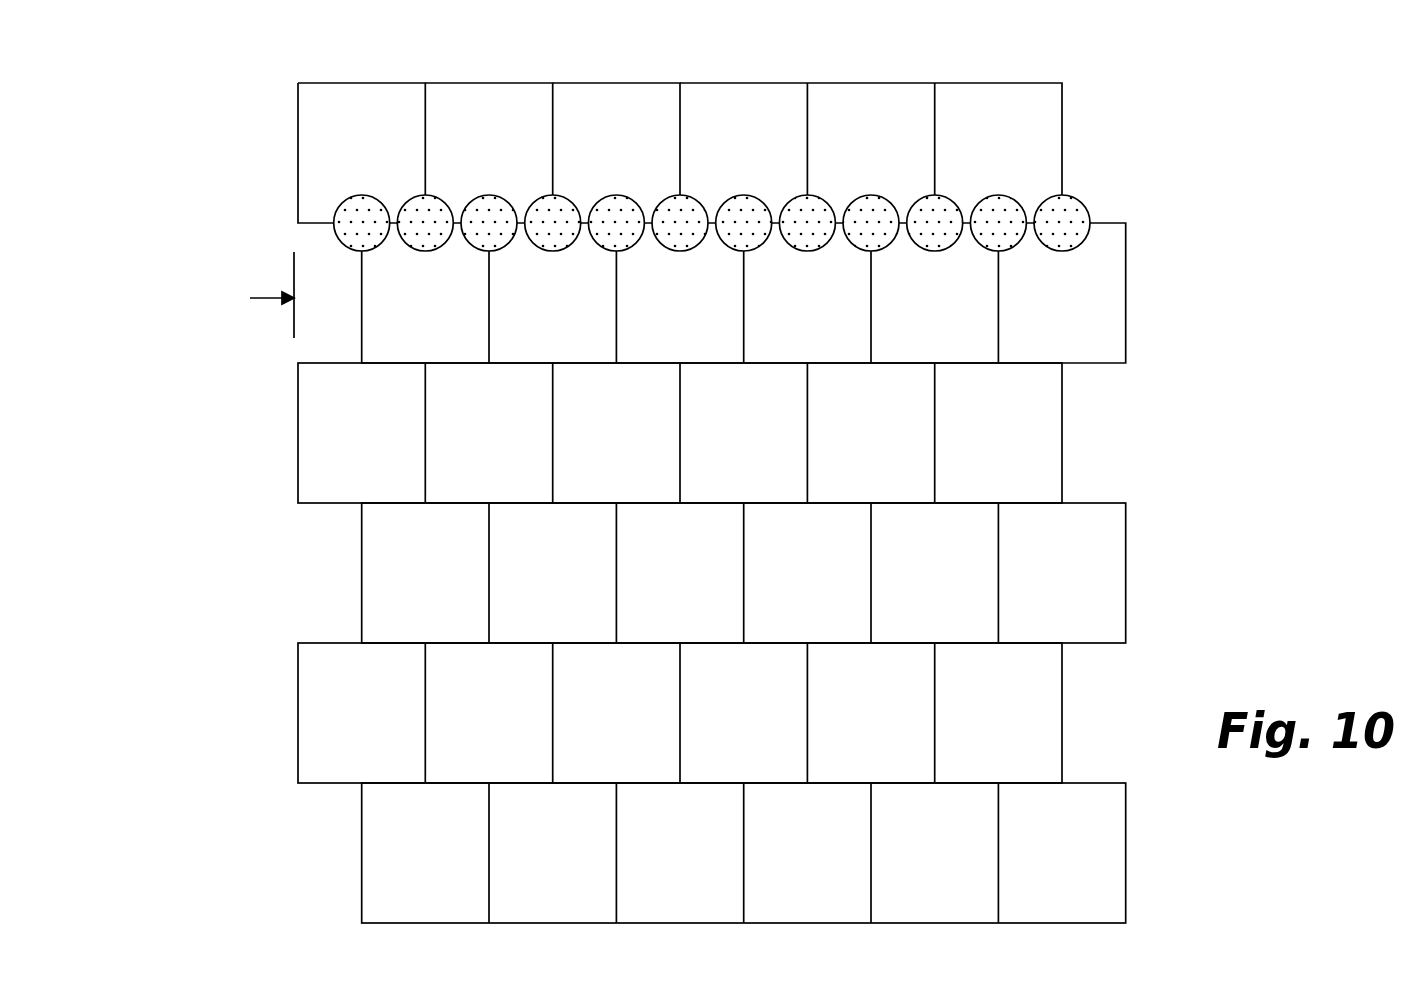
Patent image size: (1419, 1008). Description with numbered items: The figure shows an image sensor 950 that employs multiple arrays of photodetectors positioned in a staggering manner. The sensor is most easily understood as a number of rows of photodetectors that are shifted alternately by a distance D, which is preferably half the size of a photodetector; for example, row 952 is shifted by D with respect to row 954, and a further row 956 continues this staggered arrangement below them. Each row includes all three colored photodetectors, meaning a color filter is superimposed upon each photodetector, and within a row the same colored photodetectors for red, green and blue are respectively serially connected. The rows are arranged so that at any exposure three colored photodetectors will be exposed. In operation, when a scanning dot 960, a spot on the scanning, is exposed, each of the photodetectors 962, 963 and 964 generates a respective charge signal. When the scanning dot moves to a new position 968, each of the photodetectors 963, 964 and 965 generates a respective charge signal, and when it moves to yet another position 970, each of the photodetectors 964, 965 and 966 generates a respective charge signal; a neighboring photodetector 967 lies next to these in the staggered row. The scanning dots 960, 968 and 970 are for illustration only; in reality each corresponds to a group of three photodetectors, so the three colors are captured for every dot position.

The image sensor 950 is at (1156, 66).
The row 952 is at (243, 92).
The row 954 is at (243, 232).
The third row of pixels 956 is at (243, 372).
The scanning dot 960 is at (415, 207).
The photodetector 962 is at (361, 153).
The photodetector 963 is at (425, 307).
The photodetector 964 is at (488, 139).
The photodetector 965 is at (552, 307).
The photodetector 966 is at (616, 139).
The blue sub-pixel 967 is at (679, 307).
The scanning dot 968 is at (503, 205).
The scanning dot 970 is at (552, 207).